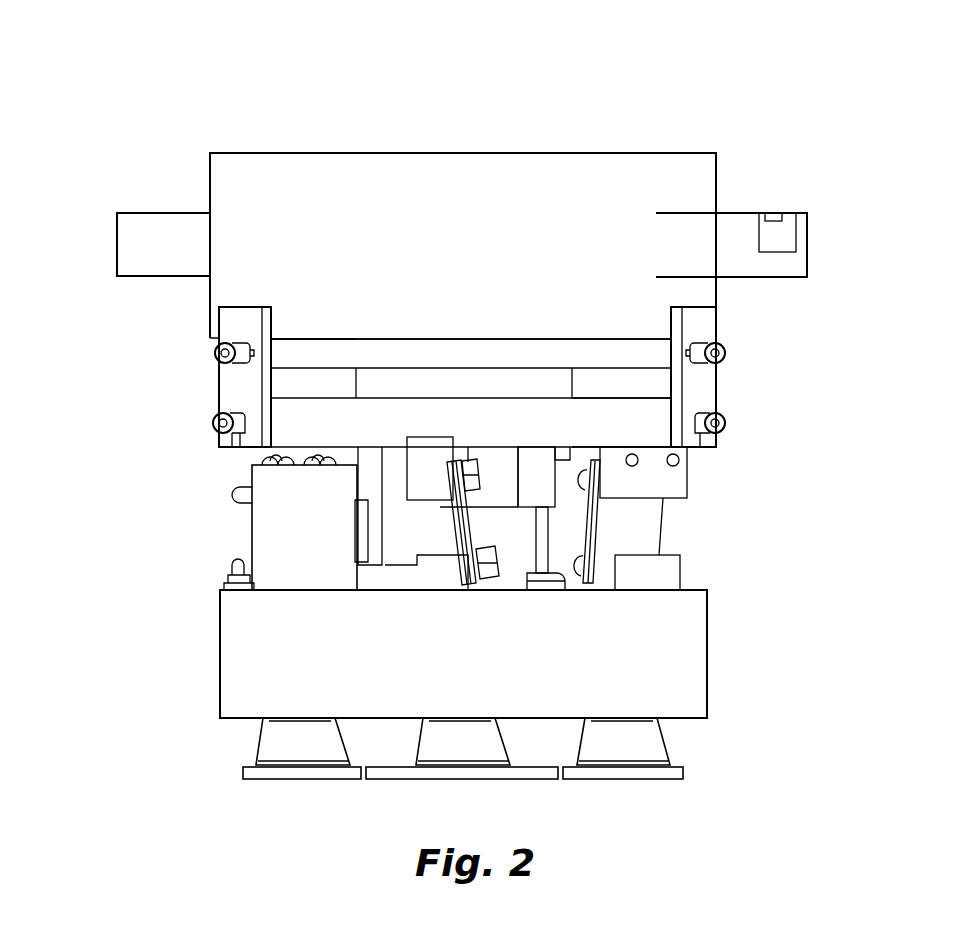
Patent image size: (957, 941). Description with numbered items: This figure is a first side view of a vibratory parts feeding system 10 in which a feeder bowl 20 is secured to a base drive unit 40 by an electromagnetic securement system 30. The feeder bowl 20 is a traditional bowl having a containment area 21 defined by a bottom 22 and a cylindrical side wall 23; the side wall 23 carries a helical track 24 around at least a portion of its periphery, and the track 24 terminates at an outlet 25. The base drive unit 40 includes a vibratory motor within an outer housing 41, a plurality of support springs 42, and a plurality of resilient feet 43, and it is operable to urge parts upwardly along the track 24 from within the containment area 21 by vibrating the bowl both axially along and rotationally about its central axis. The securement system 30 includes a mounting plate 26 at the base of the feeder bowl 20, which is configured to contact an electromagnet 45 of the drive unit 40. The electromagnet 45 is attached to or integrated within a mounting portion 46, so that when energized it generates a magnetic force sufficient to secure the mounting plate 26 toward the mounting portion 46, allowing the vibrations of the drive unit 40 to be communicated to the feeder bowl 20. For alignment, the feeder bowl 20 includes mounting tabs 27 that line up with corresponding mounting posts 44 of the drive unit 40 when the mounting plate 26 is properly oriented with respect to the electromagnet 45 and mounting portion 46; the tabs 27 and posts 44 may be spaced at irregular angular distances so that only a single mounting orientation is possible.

The vibratory parts feeding system 10 is at (166, 63).
The feeder bowl 20 is at (715, 152).
The containment area 21 is at (296, 139).
The bottom 22 is at (300, 337).
The cylindrical side wall 23 is at (235, 185).
The helical track 24 is at (131, 235).
The outlet 25 is at (782, 233).
The mounting plate 26 is at (648, 352).
The mounting tabs 27 is at (237, 322).
The electromagnetic securement system 30 is at (750, 428).
The base drive unit 40 is at (710, 650).
The outer housing 41 is at (230, 605).
The support springs 42 is at (450, 528).
The resilient feet 43 is at (636, 771).
The mounting posts 44 is at (214, 429).
The electromagnet 45 is at (390, 385).
The mounting portion 46 is at (615, 422).